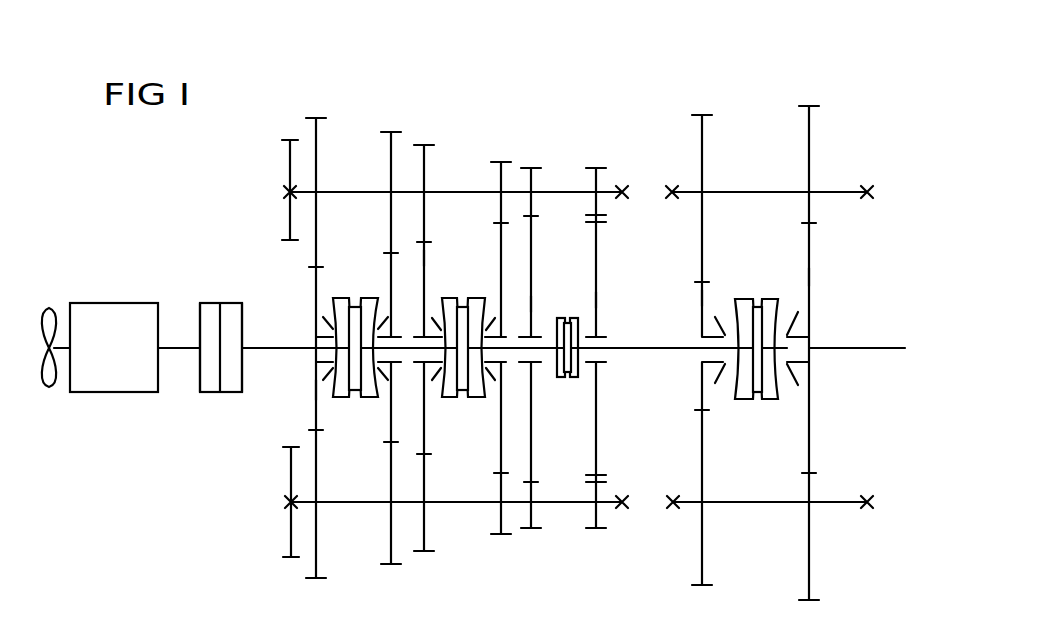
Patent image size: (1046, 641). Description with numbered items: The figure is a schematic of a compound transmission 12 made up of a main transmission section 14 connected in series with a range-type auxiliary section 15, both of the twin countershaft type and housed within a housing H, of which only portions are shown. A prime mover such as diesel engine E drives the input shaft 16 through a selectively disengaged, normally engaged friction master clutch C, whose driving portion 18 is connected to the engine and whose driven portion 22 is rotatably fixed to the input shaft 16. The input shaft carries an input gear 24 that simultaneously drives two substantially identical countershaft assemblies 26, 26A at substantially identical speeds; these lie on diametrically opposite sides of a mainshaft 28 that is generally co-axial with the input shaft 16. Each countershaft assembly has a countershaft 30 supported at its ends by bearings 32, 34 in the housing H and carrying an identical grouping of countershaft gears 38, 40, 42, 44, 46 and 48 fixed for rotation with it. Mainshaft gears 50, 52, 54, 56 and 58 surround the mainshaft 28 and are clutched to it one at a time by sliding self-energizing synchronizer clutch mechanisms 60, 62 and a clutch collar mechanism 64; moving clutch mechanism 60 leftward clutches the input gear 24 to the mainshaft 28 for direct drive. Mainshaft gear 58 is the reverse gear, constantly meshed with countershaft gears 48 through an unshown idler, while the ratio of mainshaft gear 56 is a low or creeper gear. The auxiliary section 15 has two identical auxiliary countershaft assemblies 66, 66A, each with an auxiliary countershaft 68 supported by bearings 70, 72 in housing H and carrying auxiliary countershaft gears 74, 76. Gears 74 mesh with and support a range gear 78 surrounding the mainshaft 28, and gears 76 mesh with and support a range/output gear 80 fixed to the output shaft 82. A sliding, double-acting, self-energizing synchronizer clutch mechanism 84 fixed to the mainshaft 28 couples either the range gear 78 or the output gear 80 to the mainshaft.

The compound transmission 12 is at (650, 100).
The main transmission section 14 is at (435, 98).
The range-type auxiliary section 15 is at (773, 88).
The input shaft 16 is at (286, 348).
The input or driving portion 18 is at (210, 392).
The driven portion 22 is at (232, 393).
The input gear 24 is at (316, 393).
The countershaft assembly 26 is at (559, 177).
The countershaft assembly 26A is at (562, 517).
The mainshaft 28 is at (640, 350).
The countershaft 30 is at (350, 194).
The bearing 32 is at (290, 192).
The bearing 34 is at (622, 190).
The countershaft gear 38 is at (316, 140).
The countershaft gear 40 is at (391, 158).
The countershaft gear 42 is at (424, 165).
The countershaft gear 44 is at (501, 170).
The countershaft gear 46 is at (531, 205).
The countershaft gear 48 is at (600, 210).
The mainshaft gear 50 is at (390, 280).
The mainshaft gear 52 is at (424, 258).
The mainshaft gear 54 is at (500, 280).
The mainshaft gear 56 is at (530, 305).
The mainshaft gear 58 is at (597, 300).
The synchronizer clutch mechanism 60 is at (355, 413).
The synchronizer clutch mechanism 62 is at (462, 413).
The clutch collar mechanism 64 is at (566, 393).
The auxiliary countershaft assembly 66 is at (762, 208).
The auxiliary countershaft assembly 66A is at (762, 487).
The auxiliary countershaft 68 is at (765, 190).
The bearing 70 is at (672, 190).
The bearing 72 is at (867, 190).
The auxiliary section countershaft gear 74 is at (702, 150).
The auxiliary section countershaft gear 76 is at (809, 120).
The range gear 78 is at (702, 297).
The range/output gear 80 is at (809, 277).
The output shaft 82 is at (862, 348).
The synchronizer clutch mechanism 84 is at (754, 411).
The friction master clutch C is at (205, 294).
The diesel engine E is at (114, 347).
The housing H is at (290, 166).